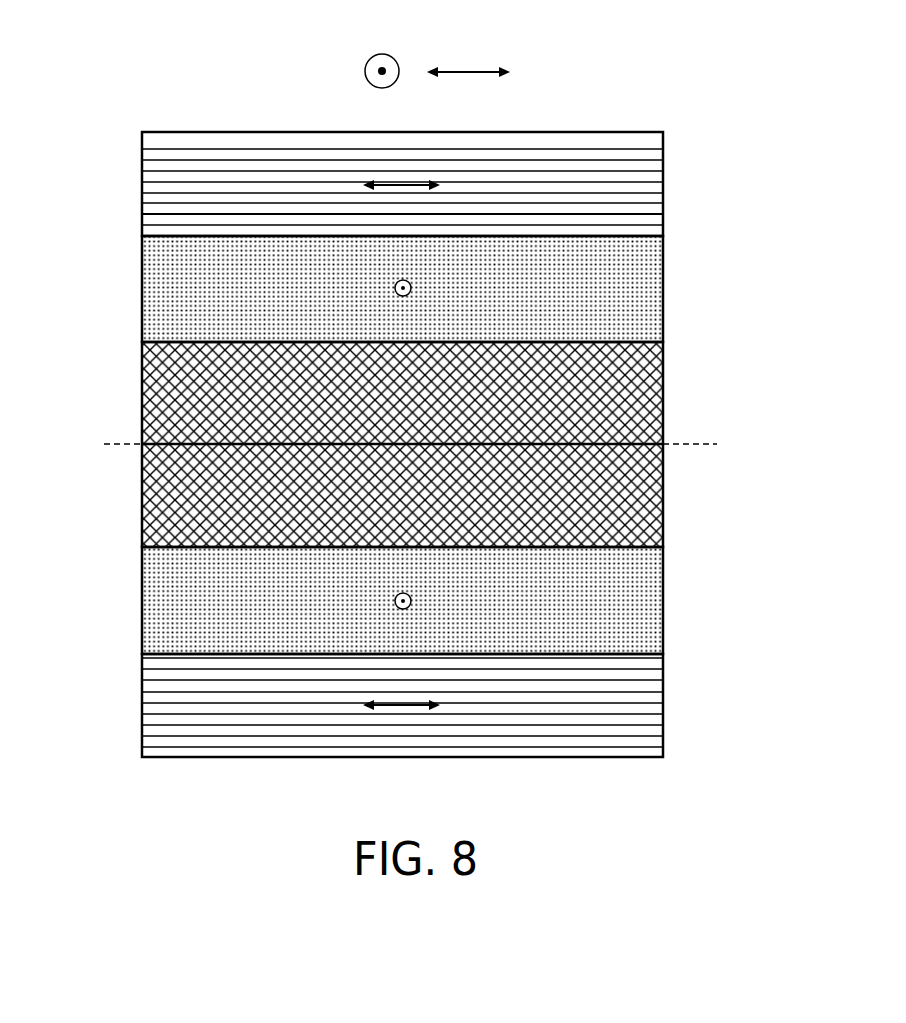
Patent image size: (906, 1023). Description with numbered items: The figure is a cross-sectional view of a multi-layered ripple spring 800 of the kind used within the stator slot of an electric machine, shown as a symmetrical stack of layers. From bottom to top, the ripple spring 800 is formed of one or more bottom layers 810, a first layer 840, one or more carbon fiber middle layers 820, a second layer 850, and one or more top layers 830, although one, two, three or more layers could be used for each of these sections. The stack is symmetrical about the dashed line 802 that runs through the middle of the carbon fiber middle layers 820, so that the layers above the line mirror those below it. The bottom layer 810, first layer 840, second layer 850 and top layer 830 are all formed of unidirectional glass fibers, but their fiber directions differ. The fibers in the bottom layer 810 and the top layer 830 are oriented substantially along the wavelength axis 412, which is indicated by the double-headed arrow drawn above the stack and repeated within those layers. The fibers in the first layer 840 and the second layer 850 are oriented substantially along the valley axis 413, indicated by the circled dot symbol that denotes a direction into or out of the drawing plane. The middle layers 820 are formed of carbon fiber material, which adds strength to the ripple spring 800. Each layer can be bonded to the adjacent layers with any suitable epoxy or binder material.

The ripple spring 800 is at (406, 387).
The dashed line 802 is at (104, 444).
The bottom layer 810 is at (663, 700).
The carbon fiber middle layer 820 is at (663, 390).
The top layer 830 is at (663, 180).
The first layer 840 is at (142, 600).
The second layer 850 is at (142, 290).
The wavelength axis 412 is at (473, 71).
The valley axis 413 is at (364, 71).